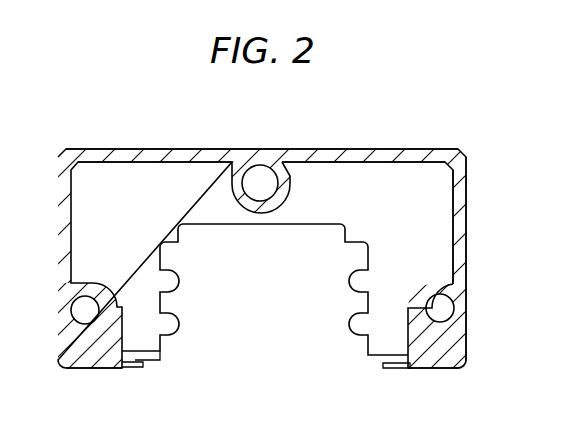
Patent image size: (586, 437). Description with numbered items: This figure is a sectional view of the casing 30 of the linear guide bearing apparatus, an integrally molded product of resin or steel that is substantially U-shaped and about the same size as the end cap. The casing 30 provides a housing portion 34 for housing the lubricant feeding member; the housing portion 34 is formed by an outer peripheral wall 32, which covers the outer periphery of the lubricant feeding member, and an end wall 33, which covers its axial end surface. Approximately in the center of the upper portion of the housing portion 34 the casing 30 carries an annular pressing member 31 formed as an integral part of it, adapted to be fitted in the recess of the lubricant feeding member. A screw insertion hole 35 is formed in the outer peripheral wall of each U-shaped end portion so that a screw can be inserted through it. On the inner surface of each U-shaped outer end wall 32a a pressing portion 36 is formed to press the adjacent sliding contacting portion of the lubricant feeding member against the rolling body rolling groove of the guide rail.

The casing 30 is at (463, 154).
The pressing member 31 is at (234, 168).
The outer peripheral wall 32 is at (362, 150).
The U-shaped outer end wall 32a is at (460, 352).
The end wall 33 is at (412, 217).
The housing portion 34 is at (412, 253).
The screw insertion hole 35 is at (445, 307).
The pressing portion 36 is at (396, 350).